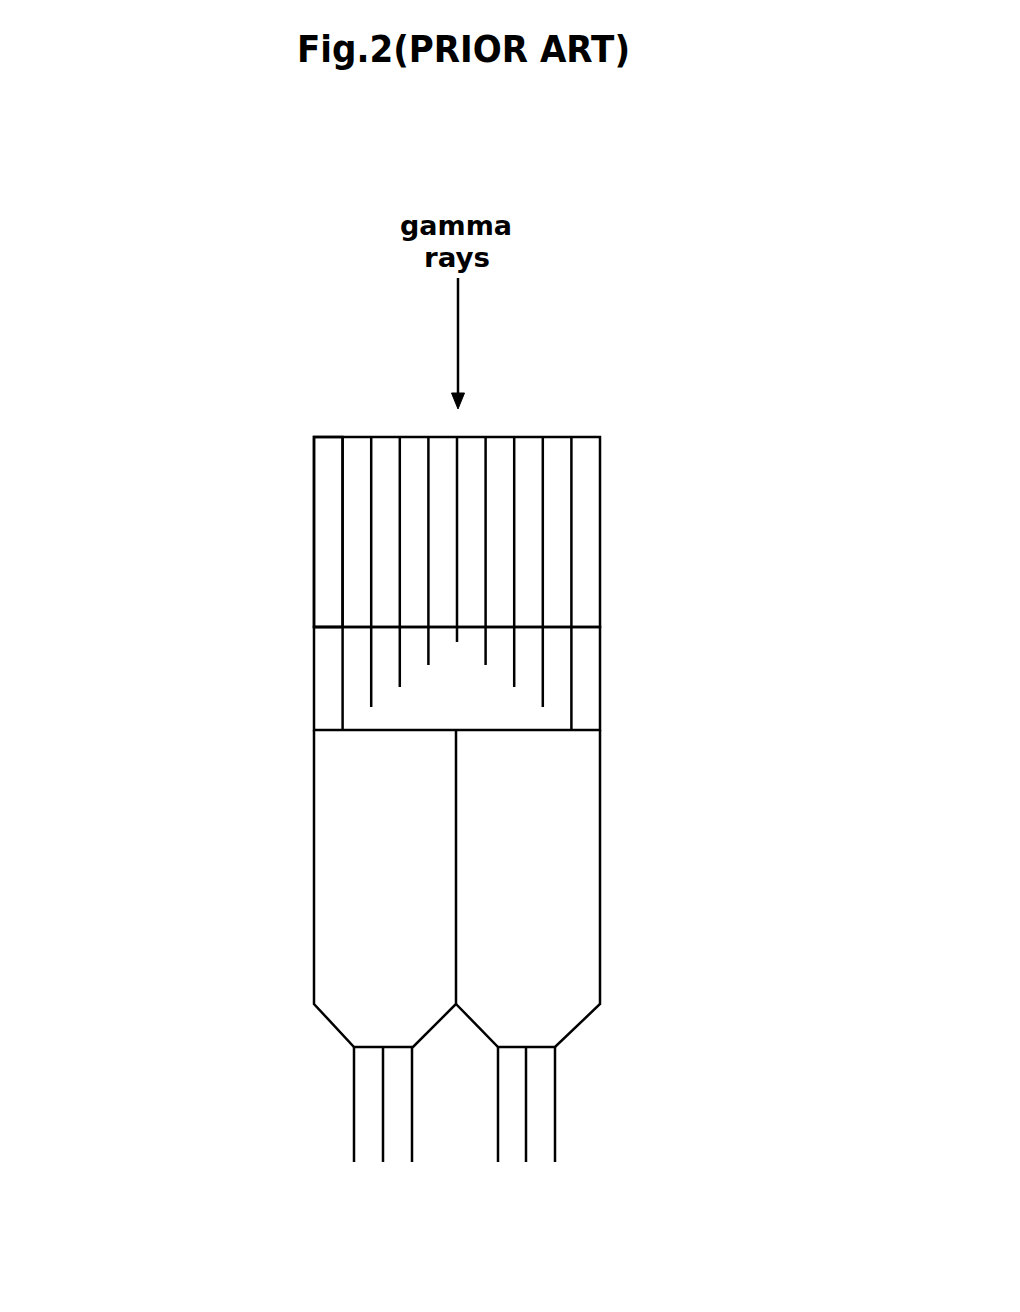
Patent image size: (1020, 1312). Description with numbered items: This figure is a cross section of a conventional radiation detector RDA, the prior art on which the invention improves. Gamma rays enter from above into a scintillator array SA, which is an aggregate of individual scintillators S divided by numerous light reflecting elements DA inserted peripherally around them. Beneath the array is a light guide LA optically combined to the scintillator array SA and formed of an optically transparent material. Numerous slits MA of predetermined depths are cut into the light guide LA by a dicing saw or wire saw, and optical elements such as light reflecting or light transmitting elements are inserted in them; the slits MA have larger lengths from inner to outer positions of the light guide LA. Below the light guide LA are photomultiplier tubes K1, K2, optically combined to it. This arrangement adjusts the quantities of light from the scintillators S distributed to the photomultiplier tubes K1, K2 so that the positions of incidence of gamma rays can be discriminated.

The radiation detector RDA is at (587, 358).
The scintillator array SA is at (603, 465).
The scintillator S is at (322, 460).
The light reflecting element DA is at (372, 487).
The light guide LA is at (600, 672).
The slit MA is at (372, 652).
The photomultiplier tube K1 is at (314, 948).
The photomultiplier tube K2 is at (600, 948).